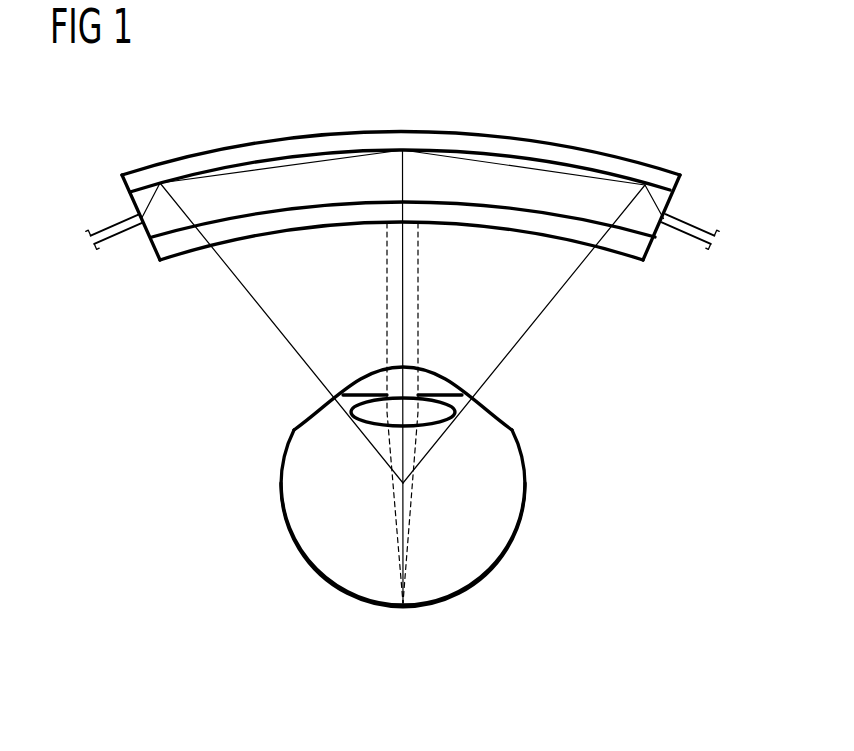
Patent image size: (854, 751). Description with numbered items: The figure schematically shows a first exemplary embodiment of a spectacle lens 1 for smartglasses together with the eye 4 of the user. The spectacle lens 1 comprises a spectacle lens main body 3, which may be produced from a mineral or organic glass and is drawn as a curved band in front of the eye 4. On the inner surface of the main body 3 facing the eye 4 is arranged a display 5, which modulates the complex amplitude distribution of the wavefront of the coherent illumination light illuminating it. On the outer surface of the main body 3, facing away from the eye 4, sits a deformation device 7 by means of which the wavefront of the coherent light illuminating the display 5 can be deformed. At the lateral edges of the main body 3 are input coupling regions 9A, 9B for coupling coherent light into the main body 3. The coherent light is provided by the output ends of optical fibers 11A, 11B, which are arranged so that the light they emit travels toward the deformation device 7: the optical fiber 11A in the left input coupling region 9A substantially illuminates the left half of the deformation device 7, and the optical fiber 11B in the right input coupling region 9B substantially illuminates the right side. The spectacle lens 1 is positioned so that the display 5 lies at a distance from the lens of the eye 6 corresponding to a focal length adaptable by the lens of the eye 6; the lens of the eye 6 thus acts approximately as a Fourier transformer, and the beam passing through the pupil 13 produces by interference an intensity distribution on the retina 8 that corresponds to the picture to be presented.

The spectacle lens 1 is at (522, 82).
The spectacle lens main body 3 is at (600, 187).
The display 5 is at (460, 215).
The deformation device 7 is at (453, 138).
The input coupling region 9A is at (137, 262).
The input coupling region 9B is at (664, 262).
The optical fiber 11A is at (116, 231).
The optical fiber 11B is at (690, 222).
The eye 4 is at (512, 487).
The lens of the eye 6 is at (441, 412).
The retina 8 is at (490, 567).
The pupil 13 is at (420, 380).